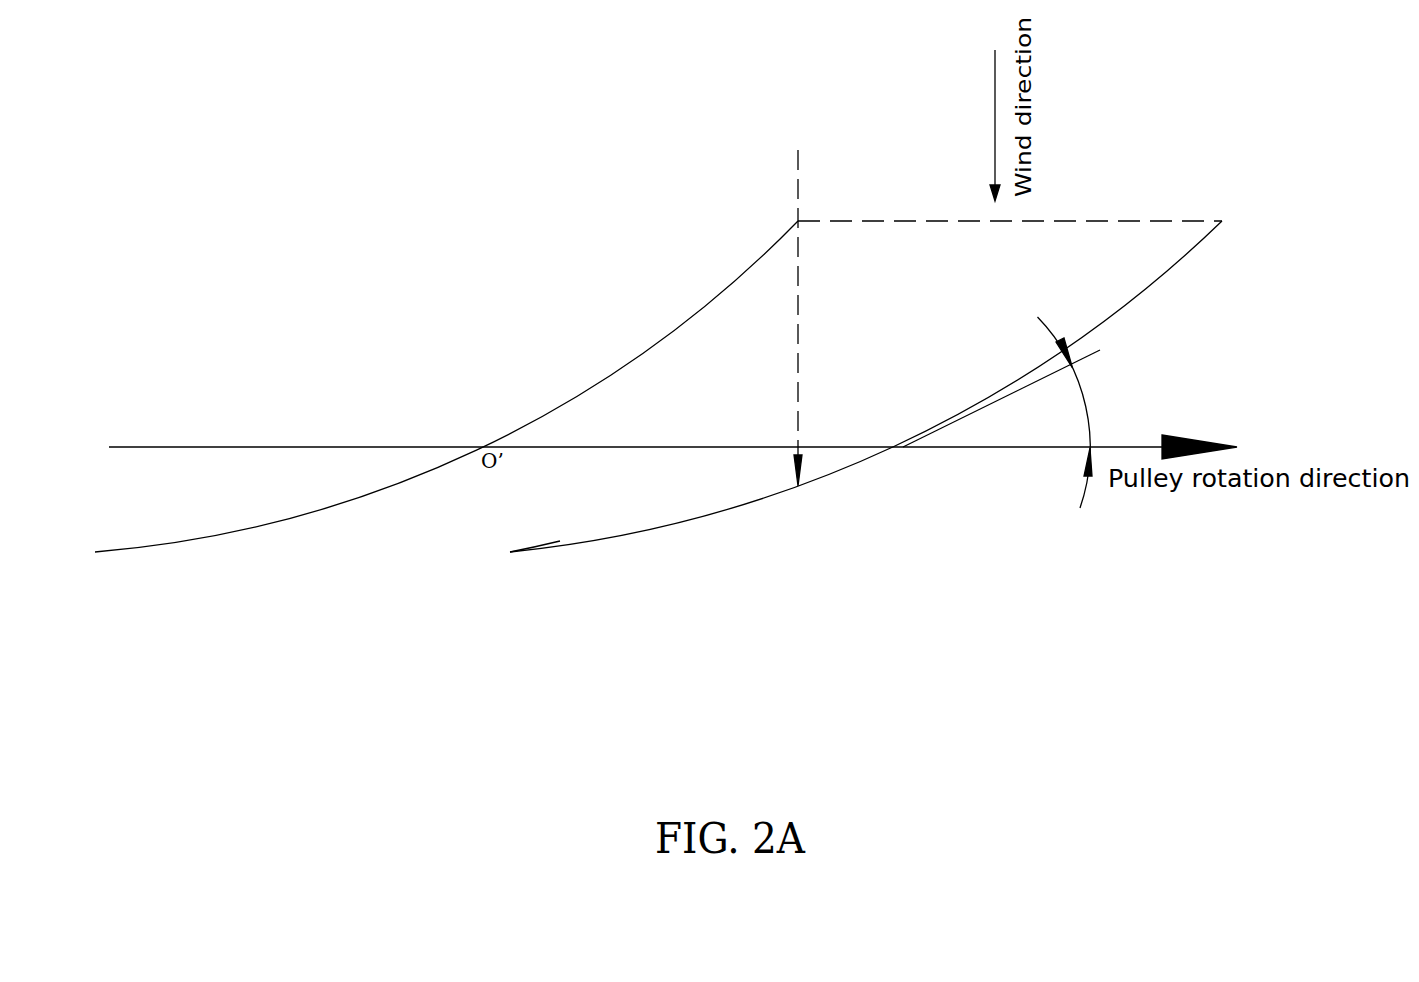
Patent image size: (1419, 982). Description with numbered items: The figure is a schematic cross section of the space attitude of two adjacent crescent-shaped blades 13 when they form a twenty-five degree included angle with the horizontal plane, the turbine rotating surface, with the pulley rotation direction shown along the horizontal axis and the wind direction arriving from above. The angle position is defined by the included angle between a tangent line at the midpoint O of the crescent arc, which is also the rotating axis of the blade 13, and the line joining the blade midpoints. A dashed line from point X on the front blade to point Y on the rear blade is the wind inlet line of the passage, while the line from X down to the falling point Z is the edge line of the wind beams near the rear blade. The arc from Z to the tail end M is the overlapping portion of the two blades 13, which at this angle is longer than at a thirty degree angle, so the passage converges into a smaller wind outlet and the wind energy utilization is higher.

The blade 13 is at (658, 336).
The point X is at (789, 303).
The point Y is at (1020, 224).
The falling point Z is at (803, 486).
The midpoint O is at (1006, 412).
The point M is at (535, 563).